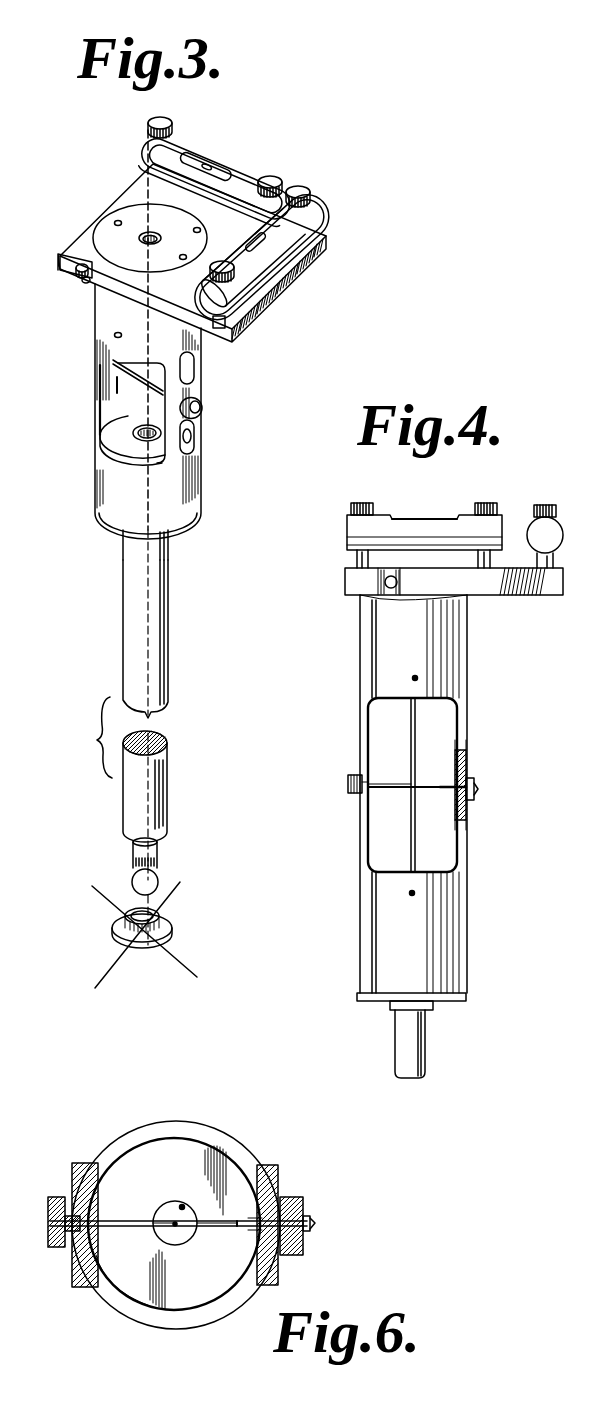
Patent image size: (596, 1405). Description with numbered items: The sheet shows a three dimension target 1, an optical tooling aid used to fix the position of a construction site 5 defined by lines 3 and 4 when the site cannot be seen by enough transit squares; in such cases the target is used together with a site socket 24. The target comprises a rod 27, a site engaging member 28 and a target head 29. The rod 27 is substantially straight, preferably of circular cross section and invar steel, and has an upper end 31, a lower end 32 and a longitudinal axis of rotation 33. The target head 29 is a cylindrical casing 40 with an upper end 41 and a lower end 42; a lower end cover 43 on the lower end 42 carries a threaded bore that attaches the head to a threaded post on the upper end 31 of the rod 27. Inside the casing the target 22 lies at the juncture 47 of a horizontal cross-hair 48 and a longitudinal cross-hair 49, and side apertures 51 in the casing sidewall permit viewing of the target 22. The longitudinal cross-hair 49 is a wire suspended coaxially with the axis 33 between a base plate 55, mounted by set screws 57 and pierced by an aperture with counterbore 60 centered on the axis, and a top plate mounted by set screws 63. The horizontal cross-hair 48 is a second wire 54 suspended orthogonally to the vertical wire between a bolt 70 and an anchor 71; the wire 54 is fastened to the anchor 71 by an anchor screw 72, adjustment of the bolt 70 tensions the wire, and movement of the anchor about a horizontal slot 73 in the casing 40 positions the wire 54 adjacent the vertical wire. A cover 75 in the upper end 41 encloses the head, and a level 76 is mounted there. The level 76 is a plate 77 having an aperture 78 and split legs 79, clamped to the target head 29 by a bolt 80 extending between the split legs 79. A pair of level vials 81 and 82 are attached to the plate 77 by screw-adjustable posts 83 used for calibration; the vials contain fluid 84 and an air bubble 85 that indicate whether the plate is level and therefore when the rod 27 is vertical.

In FIG. 3, the three dimension target 1 is at (212, 121).
In FIG. 4, the three dimension target 1 is at (484, 714).
In FIG. 3, the line 3 is at (100, 898).
In FIG. 3, the line 4 is at (105, 973).
In FIG. 3, the construction site 5 is at (143, 933).
In FIG. 4, the construction site 5 is at (372, 467).
In FIG. 4, the target 22 is at (410, 793).
In FIG. 3, the site socket 24 is at (165, 918).
In FIG. 3, the rod 27 is at (172, 664).
In FIG. 4, the rod 27 is at (395, 1055).
In FIG. 3, the site engaging member 28 is at (158, 864).
In FIG. 3, the target head 29 is at (82, 407).
In FIG. 4, the target head 29 is at (360, 735).
In FIG. 6, the target head 29 is at (121, 1130).
In FIG. 3, the upper end 31 is at (170, 546).
In FIG. 4, the upper end 31 is at (429, 1022).
In FIG. 3, the lower end 32 is at (172, 836).
In FIG. 3, the longitudinal axis of rotation 33 is at (157, 198).
In FIG. 4, the cylindrical casing 40 is at (467, 681).
In FIG. 6, the cylindrical casing 40 is at (208, 1122).
In FIG. 4, the upper end 41 is at (467, 627).
In FIG. 3, the lower end 42 is at (97, 505).
In FIG. 4, the lower end 42 is at (467, 986).
In FIG. 4, the lower end cover 43 is at (357, 996).
In FIG. 3, the juncture 47 is at (150, 365).
In FIG. 4, the horizontal cross-hair 48 is at (428, 786).
In FIG. 6, the horizontal cross-hair 48 is at (237, 1227).
In FIG. 4, the longitudinal cross-hair 49 is at (416, 729).
In FIG. 6, the longitudinal cross-hair 49 is at (173, 1228).
In FIG. 3, the side apertures 51 is at (196, 438).
In FIG. 4, the second wire 54 is at (394, 786).
In FIG. 6, the second wire 54 is at (128, 1220).
In FIG. 3, the base plate 55 is at (120, 436).
In FIG. 6, the base plate 55 is at (122, 1281).
In FIG. 3, the set screws 57 is at (118, 477).
In FIG. 4, the set screws 57 is at (412, 893).
In FIG. 6, the counterbore 60 is at (182, 1206).
In FIG. 4, the set screws 63 is at (415, 678).
In FIG. 4, the bolt 70 is at (357, 795).
In FIG. 6, the bolt 70 is at (50, 1248).
In FIG. 3, the anchor 71 is at (204, 410).
In FIG. 4, the anchor 71 is at (474, 780).
In FIG. 6, the anchor 71 is at (302, 1202).
In FIG. 3, the anchor screw 72 is at (200, 404).
In FIG. 4, the anchor screw 72 is at (479, 789).
In FIG. 6, the anchor screw 72 is at (314, 1209).
In FIG. 4, the horizontal slot 73 is at (455, 789).
In FIG. 6, the horizontal slot 73 is at (253, 1224).
In FIG. 3, the cover 75 is at (103, 231).
In FIG. 3, the level 76 is at (333, 236).
In FIG. 3, the plate 77 is at (262, 312).
In FIG. 4, the plate 77 is at (563, 596).
In FIG. 3, the aperture 78 is at (200, 231).
In FIG. 3, the split legs 79 is at (56, 262).
In FIG. 4, the split legs 79 is at (347, 580).
In FIG. 3, the bolt 80 is at (86, 283).
In FIG. 4, the bolt 80 is at (398, 582).
In FIG. 3, the level vial 81 is at (312, 212).
In FIG. 4, the level vial 81 is at (561, 540).
In FIG. 3, the level vial 82 is at (268, 164).
In FIG. 4, the level vial 82 is at (350, 530).
In FIG. 3, the posts 83 is at (152, 119).
In FIG. 4, the posts 83 is at (353, 505).
In FIG. 3, the fluid 84 is at (241, 165).
In FIG. 4, the fluid 84 is at (408, 517).
In FIG. 3, the air bubble 85 is at (214, 157).